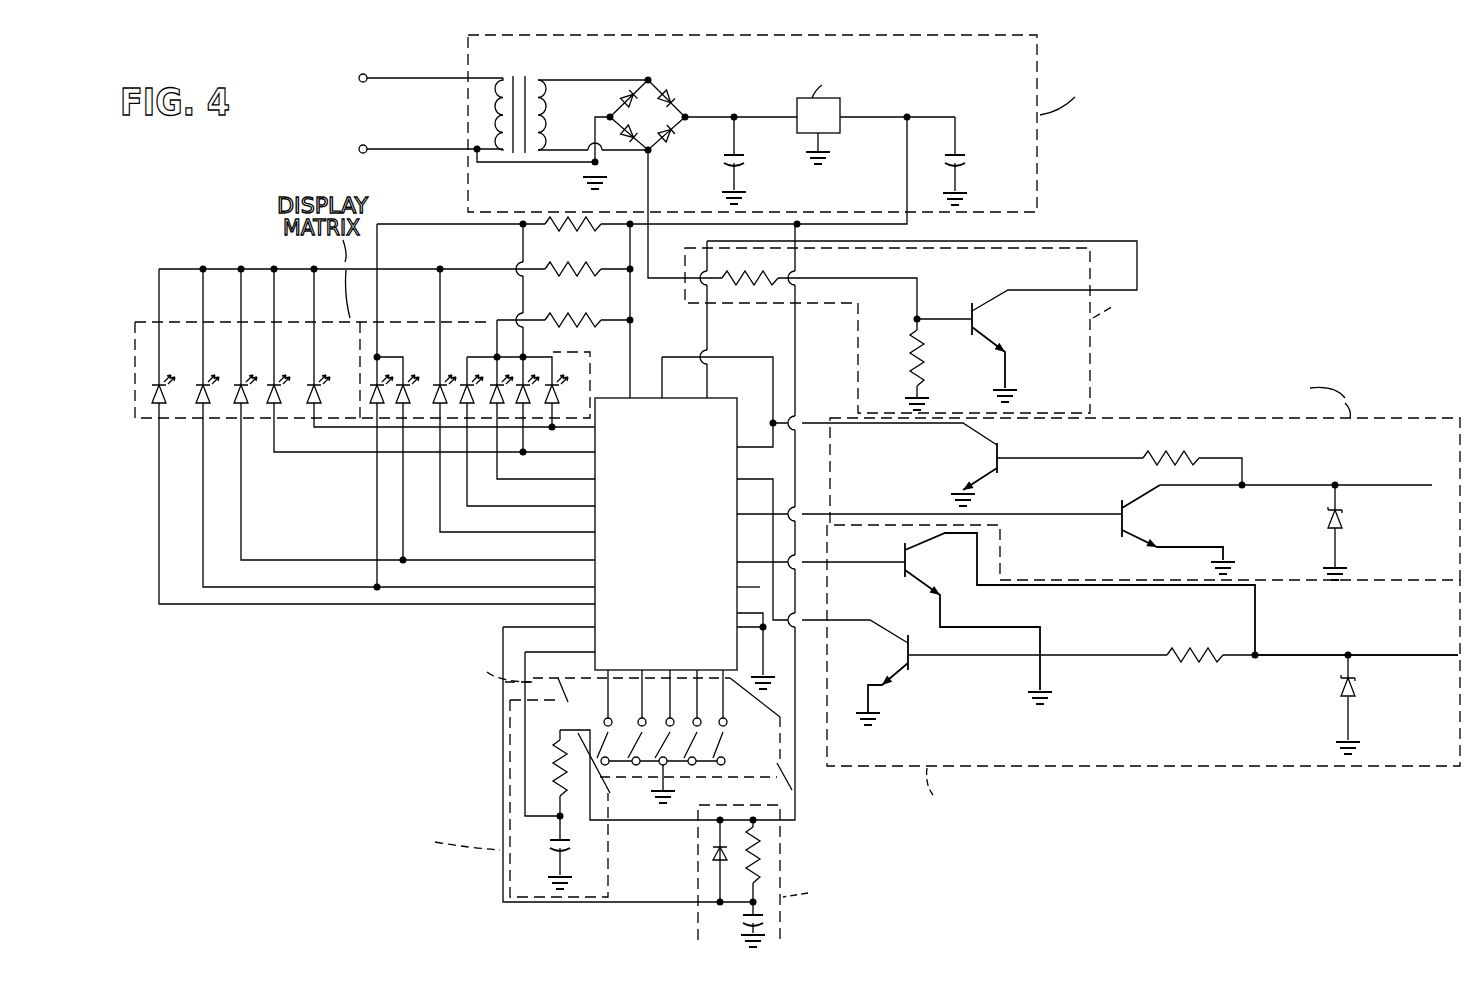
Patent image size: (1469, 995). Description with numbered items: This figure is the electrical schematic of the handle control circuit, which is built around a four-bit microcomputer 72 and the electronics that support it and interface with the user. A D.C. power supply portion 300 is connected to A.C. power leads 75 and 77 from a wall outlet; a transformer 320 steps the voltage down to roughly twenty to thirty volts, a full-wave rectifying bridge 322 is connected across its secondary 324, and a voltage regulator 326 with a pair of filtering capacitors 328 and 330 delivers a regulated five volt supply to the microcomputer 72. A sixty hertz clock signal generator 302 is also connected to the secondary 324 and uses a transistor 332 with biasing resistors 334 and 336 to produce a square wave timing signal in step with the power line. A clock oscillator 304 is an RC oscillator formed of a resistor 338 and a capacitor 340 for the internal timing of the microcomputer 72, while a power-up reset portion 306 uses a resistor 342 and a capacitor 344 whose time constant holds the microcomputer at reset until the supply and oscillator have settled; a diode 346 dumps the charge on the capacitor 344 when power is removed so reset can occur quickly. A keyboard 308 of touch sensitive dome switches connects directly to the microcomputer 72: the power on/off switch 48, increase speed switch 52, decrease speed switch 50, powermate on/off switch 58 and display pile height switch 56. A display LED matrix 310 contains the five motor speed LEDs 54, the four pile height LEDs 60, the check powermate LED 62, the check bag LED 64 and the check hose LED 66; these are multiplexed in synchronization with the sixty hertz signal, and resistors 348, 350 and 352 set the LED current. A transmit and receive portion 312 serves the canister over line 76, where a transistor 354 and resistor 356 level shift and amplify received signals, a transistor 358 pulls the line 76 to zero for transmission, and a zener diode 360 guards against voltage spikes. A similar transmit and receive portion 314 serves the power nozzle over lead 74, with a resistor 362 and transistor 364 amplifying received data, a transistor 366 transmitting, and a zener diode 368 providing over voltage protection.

The A.C. power lead 75 is at (430, 78).
The A.C. power lead 77 is at (418, 149).
The transformer 320 is at (520, 82).
The secondary 324 is at (575, 82).
The full-wave rectifying bridge 322 is at (655, 86).
The voltage regulator 326 is at (840, 112).
The filtering capacitor 328 is at (724, 160).
The filtering capacitor 330 is at (968, 158).
The D.C. power supply portion 300 is at (1040, 175).
The biasing resistor 334 is at (772, 274).
The biasing resistor 336 is at (926, 360).
The transistor 332 is at (988, 333).
The 60 Hz clock signal generator 302 is at (1093, 352).
The display LED matrix 310 is at (250, 258).
The motor speed LEDs 54 is at (300, 375).
The pile height LEDs 60 is at (370, 384).
The check powermate LED 62 is at (432, 378).
The check hose LED 66 is at (470, 378).
The check bag LED 64 is at (501, 380).
The resistor 348 is at (595, 230).
The resistor 350 is at (552, 280).
The resistor 352 is at (565, 312).
The microcomputer 72 is at (734, 401).
The keyboard 308 is at (796, 788).
The decrease speed switch 50 is at (603, 716).
The power on/off switch 48 is at (640, 717).
The increase speed switch 52 is at (676, 720).
The powermate on/off switch 58 is at (717, 706).
The display pile height switch 56 is at (727, 752).
The clock oscillator 304 is at (503, 755).
The resistor 338 is at (553, 782).
The capacitor 340 is at (556, 847).
The power-up reset portion 306 is at (785, 834).
The diode 346 is at (708, 854).
The resistor 342 is at (763, 875).
The capacitor 344 is at (776, 922).
The transmit and receive portion for the power nozzle 314 is at (1412, 418).
The transistor 364 is at (980, 480).
The resistor 362 is at (1165, 453).
The lead 74 is at (1385, 483).
The zener diode 368 is at (1345, 508).
The transistor 366 is at (1126, 500).
The transmit and receive portion for the canister 312 is at (1340, 775).
The transistor 358 is at (908, 580).
The transistor 354 is at (905, 690).
The resistor 356 is at (1190, 650).
The line 76 is at (1398, 653).
The zener diode 360 is at (1358, 698).